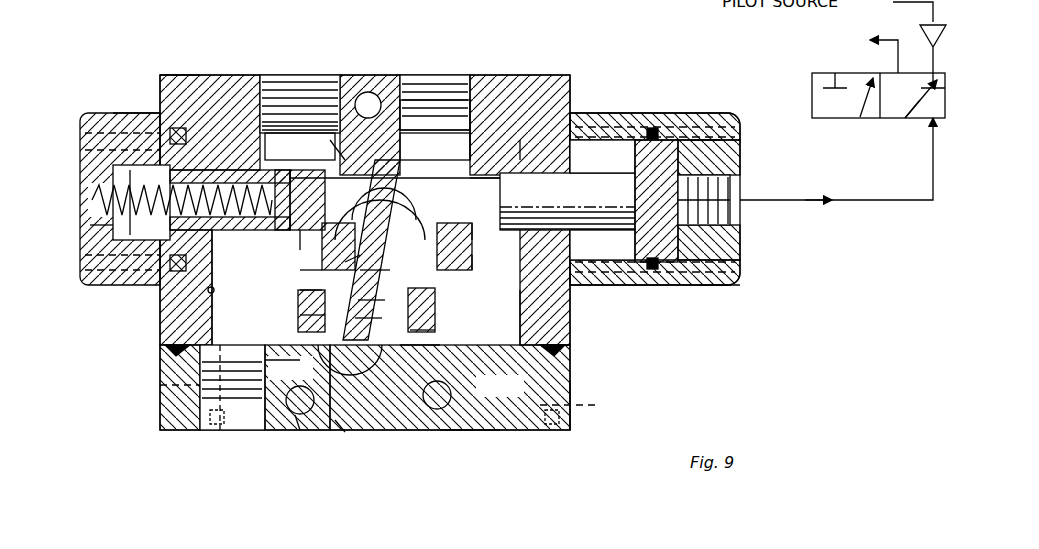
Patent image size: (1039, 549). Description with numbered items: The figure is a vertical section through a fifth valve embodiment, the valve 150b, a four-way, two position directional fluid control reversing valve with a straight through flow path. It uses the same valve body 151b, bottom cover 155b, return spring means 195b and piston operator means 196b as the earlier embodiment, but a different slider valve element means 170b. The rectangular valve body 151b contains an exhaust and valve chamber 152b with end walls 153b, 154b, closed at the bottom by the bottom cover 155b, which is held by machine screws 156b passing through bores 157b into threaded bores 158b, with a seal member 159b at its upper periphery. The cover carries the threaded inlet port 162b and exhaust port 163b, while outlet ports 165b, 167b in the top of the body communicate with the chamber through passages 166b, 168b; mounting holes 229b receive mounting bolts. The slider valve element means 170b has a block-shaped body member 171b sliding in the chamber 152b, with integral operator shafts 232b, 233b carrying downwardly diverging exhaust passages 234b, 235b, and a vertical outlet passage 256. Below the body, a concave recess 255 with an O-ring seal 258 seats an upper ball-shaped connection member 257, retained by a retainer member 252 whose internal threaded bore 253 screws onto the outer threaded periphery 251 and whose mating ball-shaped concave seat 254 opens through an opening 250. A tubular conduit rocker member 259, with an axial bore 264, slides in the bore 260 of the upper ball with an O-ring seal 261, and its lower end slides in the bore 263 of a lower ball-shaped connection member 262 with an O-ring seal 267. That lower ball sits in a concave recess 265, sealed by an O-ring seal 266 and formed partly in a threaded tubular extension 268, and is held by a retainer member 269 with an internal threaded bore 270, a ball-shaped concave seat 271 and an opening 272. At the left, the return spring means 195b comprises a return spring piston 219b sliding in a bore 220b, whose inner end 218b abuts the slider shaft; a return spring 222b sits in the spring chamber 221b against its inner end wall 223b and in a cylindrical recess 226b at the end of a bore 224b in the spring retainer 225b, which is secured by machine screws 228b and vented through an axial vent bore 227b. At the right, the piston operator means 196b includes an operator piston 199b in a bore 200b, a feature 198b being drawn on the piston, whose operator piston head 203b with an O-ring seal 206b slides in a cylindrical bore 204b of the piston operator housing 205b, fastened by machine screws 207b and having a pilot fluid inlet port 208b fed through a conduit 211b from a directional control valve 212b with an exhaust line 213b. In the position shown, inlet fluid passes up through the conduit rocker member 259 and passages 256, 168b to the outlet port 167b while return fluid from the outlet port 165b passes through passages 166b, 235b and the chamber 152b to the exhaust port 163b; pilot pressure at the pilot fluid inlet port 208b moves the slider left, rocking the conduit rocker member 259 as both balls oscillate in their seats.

The valve 150b is at (237, 72).
The valve body 151b is at (170, 75).
The exhaust and valve chamber 152b is at (480, 130).
The end wall of the chamber 153b is at (160, 310).
The end wall of the chamber 154b is at (572, 310).
The bottom cover 155b is at (572, 385).
The machine screws 156b is at (206, 432).
The bores 157b is at (158, 388).
The threaded bores 158b is at (162, 345).
The seal member 159b is at (572, 350).
The inlet port 162b is at (395, 432).
The exhaust port 163b is at (258, 415).
The outlet port 165b is at (270, 80).
The passage 166b is at (303, 128).
The outlet port 167b is at (468, 92).
The passage 168b is at (403, 128).
The slider valve element means 170b is at (318, 246).
The body member 171b is at (435, 115).
The return spring means 195b is at (130, 110).
The piston operator means 196b is at (724, 110).
The threads 198b is at (505, 195).
The operator piston 199b is at (596, 136).
The bore 200b is at (552, 242).
The operator piston head 203b is at (695, 136).
The cylindrical bore 204b is at (618, 138).
The piston operator housing 205b is at (718, 285).
The O-ring seal 206b is at (656, 272).
The machine screws 207b is at (740, 135).
The pilot fluid inlet port 208b is at (735, 207).
The conduit 211b is at (877, 202).
The directional control valve 212b is at (905, 122).
The exhaust line 213b is at (898, 62).
The inner end of the return spring piston 218b is at (300, 146).
The return spring piston 219b is at (185, 150).
The bore 220b is at (210, 170).
The spring chamber 221b is at (113, 180).
The return spring 222b is at (84, 255).
The inner end wall of the spring chamber 223b is at (208, 290).
The bore 224b is at (84, 150).
The spring retainer 225b is at (110, 113).
The cylindrical recess 226b is at (100, 228).
The axial vent bore 227b is at (90, 200).
The machine screws 228b is at (84, 133).
The mounting holes 229b is at (368, 92).
The operator shaft 232b is at (528, 150).
The operator shaft 233b is at (295, 240).
The exhaust passage 234b is at (524, 178).
The exhaust passage 235b is at (333, 138).
The opening 250 is at (371, 250).
The outer threaded periphery 251 is at (474, 228).
The retainer member 252 is at (474, 262).
The internal threaded bore 253 is at (300, 277).
The ball-shaped concave seat 254 is at (380, 269).
The concave recess 255 is at (428, 200).
The vertical outlet passage 256 is at (435, 146).
The upper ball-shaped connection member 257 is at (290, 290).
The O-ring seal 258 is at (373, 235).
The conduit rocker member 259 is at (300, 315).
The bore 260 is at (440, 275).
The O-ring seal 261 is at (358, 262).
The lower ball-shaped connection member 262 is at (474, 404).
The bore 263 is at (340, 425).
The axial bore 264 is at (340, 332).
The concave recess 265 is at (297, 387).
The O-ring seal 266 is at (262, 354).
The O-ring seal 267 is at (440, 332).
The tubular extension 268 is at (425, 345).
The retainer member 269 is at (437, 305).
The internal threaded bore 270 is at (312, 425).
The ball-shaped concave seat 271 is at (375, 317).
The opening 272 is at (377, 302).